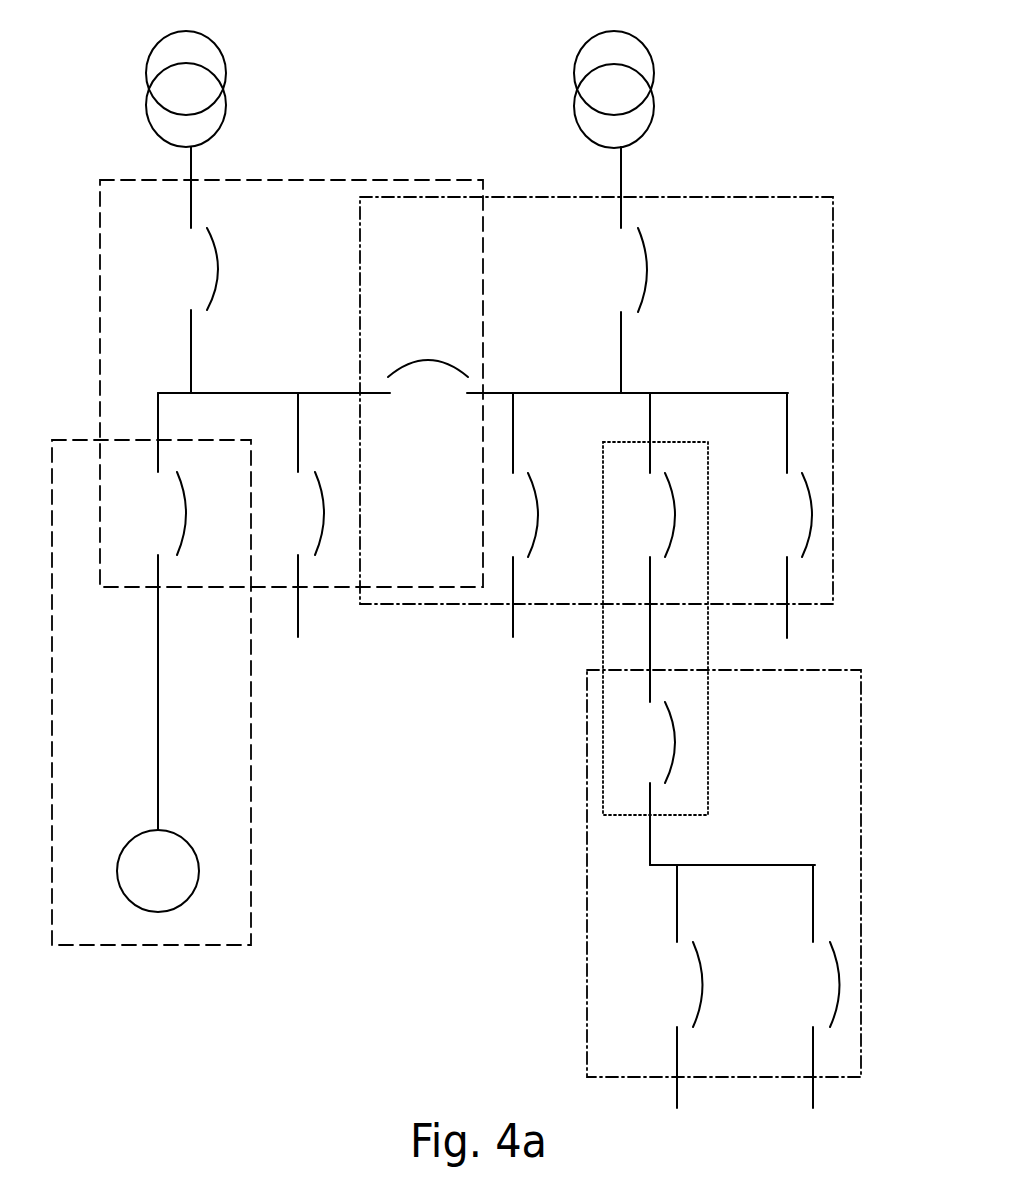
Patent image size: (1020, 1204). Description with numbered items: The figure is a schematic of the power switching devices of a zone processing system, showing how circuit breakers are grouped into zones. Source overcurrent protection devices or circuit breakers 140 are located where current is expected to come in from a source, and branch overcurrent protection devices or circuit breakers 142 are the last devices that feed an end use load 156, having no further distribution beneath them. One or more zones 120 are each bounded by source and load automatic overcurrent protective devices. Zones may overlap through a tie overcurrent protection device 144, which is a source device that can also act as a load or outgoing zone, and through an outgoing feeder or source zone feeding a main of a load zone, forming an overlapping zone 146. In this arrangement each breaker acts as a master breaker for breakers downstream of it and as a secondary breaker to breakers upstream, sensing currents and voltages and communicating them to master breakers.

The zone 120 is at (836, 298).
The source overcurrent protection device 140 is at (440, 358).
The branch overcurrent protection device 142 is at (188, 535).
The tie overcurrent protection device 144 is at (420, 358).
The overlapping zone 146 is at (708, 705).
The end use load 156 is at (192, 898).